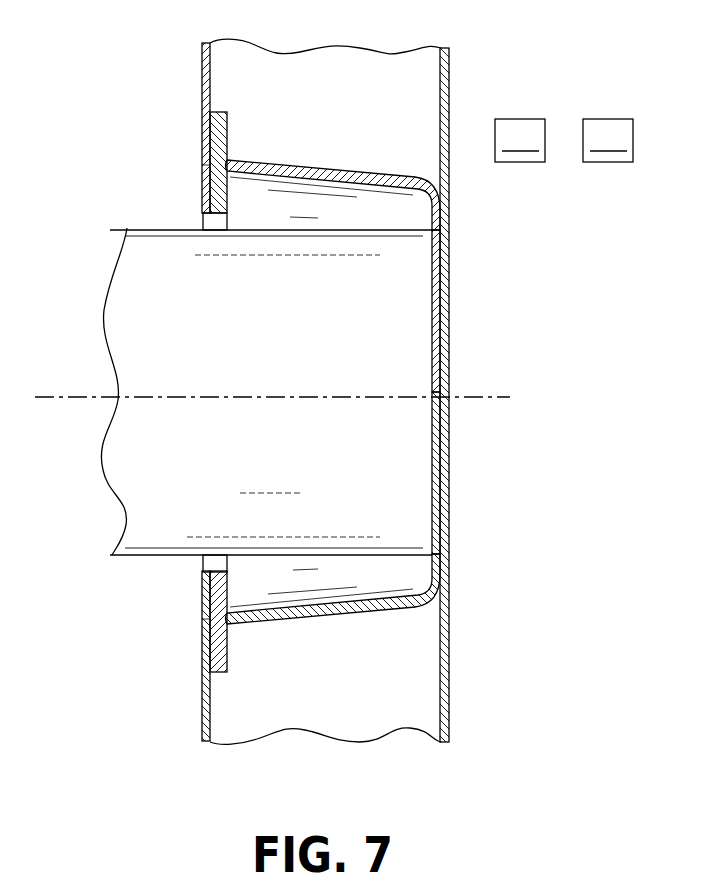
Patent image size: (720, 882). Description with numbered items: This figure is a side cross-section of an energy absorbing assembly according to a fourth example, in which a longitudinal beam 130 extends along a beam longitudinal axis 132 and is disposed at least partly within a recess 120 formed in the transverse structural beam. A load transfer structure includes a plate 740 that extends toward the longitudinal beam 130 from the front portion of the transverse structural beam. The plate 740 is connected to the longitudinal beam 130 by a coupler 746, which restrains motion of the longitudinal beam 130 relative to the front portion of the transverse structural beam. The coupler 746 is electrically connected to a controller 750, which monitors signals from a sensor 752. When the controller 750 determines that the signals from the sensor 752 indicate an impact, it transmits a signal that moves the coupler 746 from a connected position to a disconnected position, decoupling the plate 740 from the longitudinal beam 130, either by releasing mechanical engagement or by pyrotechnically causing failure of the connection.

The recess 120 is at (260, 198).
The longitudinal beam 130 is at (127, 229).
The beam longitudinal axis 132 is at (53, 393).
The plate 740 is at (208, 655).
The coupler 746 is at (203, 563).
The controller 750 is at (227, 223).
The sensor 752 is at (583, 142).